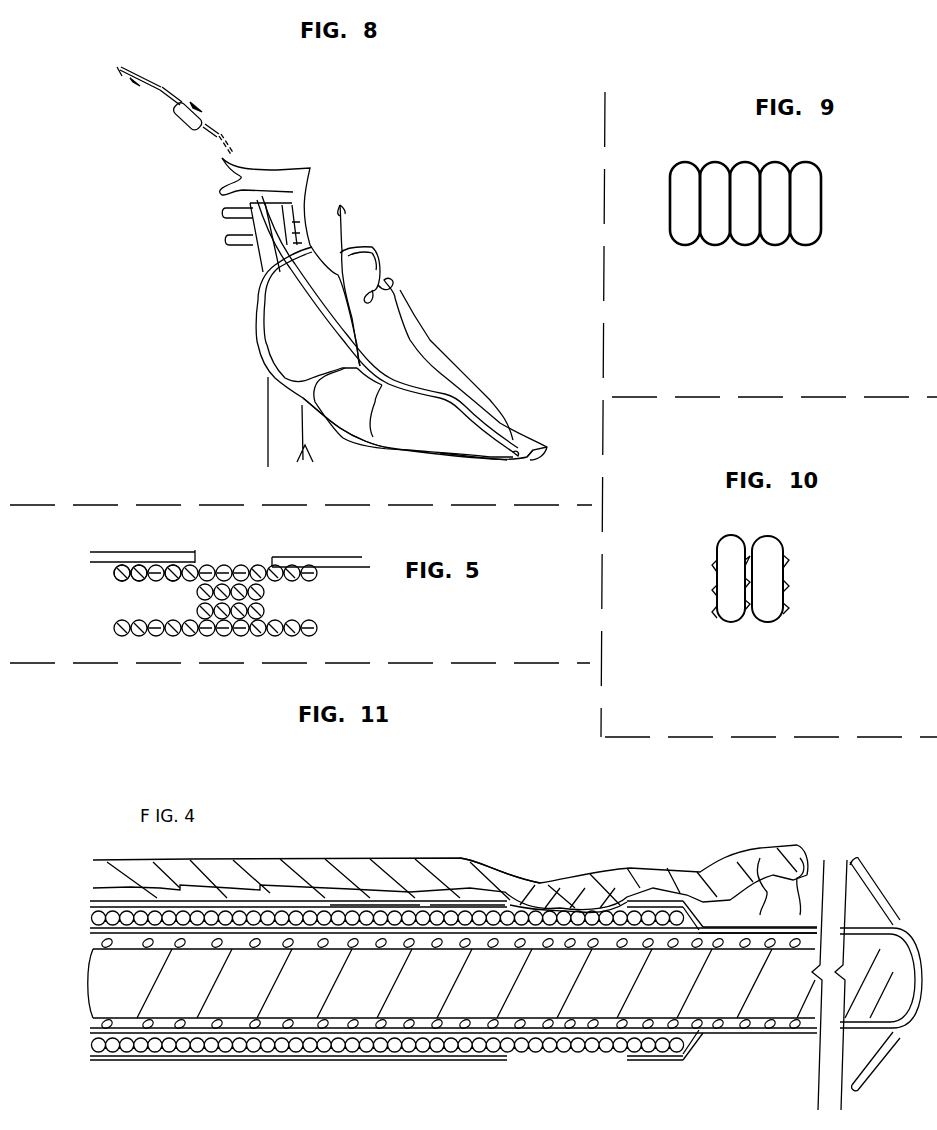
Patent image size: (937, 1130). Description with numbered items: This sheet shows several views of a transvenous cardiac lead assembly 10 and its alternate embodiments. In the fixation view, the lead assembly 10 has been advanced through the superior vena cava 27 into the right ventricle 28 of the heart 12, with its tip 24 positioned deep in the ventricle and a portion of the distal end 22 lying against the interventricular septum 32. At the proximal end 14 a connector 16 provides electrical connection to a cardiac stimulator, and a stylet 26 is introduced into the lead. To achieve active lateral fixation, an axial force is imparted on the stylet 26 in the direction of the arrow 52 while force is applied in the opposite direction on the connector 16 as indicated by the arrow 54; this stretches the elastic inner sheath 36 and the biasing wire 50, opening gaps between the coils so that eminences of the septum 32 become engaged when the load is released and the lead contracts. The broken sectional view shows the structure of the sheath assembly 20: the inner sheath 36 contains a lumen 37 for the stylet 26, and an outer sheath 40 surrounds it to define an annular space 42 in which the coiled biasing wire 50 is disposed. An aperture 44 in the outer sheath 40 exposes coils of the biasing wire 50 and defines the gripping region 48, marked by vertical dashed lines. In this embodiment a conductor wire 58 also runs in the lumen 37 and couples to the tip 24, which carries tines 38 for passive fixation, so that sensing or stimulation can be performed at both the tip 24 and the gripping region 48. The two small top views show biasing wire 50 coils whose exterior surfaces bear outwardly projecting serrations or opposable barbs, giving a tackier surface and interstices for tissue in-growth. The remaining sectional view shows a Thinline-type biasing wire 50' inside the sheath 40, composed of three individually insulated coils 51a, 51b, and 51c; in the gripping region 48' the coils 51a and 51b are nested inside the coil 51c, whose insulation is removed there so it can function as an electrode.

In FIG. 8, the lead assembly 10 is at (152, 212).
In FIG. 11, the lead assembly 10 is at (266, 800).
In FIG. 8, the heart 12 is at (426, 448).
In FIG. 8, the proximal end 14 is at (205, 76).
In FIG. 8, the connector 16 is at (192, 130).
In FIG. 8, the sheath assembly 20 is at (360, 433).
In FIG. 11, the sheath assembly 20 is at (107, 860).
In FIG. 8, the distal end 22 is at (478, 440).
In FIG. 11, the distal end 22 is at (348, 850).
In FIG. 8, the tip 24 is at (520, 460).
In FIG. 11, the tip 24 is at (900, 925).
In FIG. 8, the stylet 26 is at (148, 80).
In FIG. 11, the stylet 26 is at (760, 858).
In FIG. 8, the superior vena cava 27 is at (252, 258).
In FIG. 8, the right ventricle 28 is at (398, 423).
In FIG. 11, the interventricular septum 32 is at (733, 858).
In FIG. 11, the inner sheath 36 is at (800, 858).
In FIG. 11, the lumen 37 is at (370, 882).
In FIG. 11, the tines 38 is at (862, 1072).
In FIG. 5, the outer sheath 40 is at (348, 556).
In FIG. 11, the outer sheath 40 is at (400, 896).
In FIG. 11, the annular space 42 is at (226, 912).
In FIG. 11, the aperture 44 is at (520, 870).
In FIG. 11, the gripping region 48 is at (568, 839).
In FIG. 5, the gripping region 48' is at (234, 571).
In FIG. 9, the biasing wire 50 is at (745, 254).
In FIG. 10, the biasing wire 50 is at (750, 621).
In FIG. 11, the biasing wire 50 is at (567, 866).
In FIG. 5, the biasing wire 50' is at (169, 583).
In FIG. 5, the coil 51a is at (120, 566).
In FIG. 5, the coil 51b is at (139, 565).
In FIG. 5, the coil 51c is at (170, 565).
In FIG. 8, the arrow 52 is at (114, 80).
In FIG. 8, the arrow 54 is at (205, 108).
In FIG. 11, the conductor wire 58 is at (290, 900).